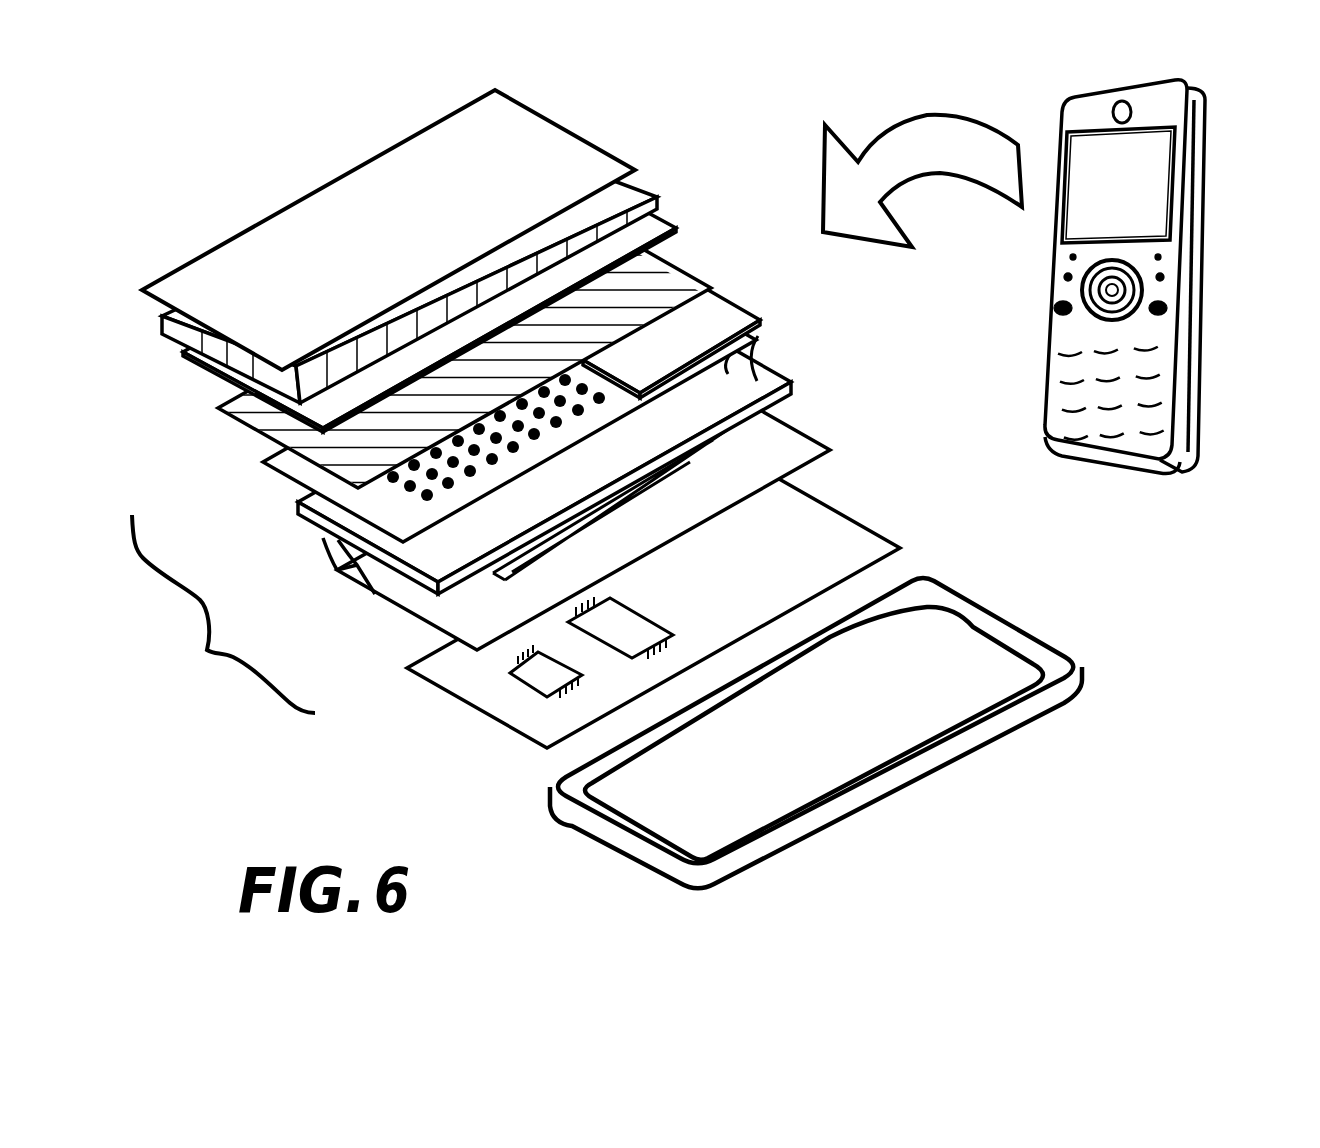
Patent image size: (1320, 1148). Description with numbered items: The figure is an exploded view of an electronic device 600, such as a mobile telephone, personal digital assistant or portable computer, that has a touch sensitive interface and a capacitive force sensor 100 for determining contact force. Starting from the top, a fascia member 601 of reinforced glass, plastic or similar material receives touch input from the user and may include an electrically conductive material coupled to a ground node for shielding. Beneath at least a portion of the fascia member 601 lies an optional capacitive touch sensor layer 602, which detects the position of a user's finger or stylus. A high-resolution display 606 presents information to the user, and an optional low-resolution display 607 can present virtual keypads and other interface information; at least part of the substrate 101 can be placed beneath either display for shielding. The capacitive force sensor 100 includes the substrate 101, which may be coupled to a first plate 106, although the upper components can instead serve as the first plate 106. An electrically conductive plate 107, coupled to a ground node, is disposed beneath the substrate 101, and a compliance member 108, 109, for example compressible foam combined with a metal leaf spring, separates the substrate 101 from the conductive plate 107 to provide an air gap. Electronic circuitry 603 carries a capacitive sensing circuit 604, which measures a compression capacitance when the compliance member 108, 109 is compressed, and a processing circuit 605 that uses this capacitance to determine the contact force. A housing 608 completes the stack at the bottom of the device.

The capacitive force sensor 100 is at (205, 653).
The substrate 101 is at (310, 472).
The first plate 106 is at (263, 422).
The electrically conductive plate 107 is at (770, 453).
The compliance member 108 is at (305, 516).
The compliance member 109 is at (362, 576).
The electronic device 600 is at (1093, 574).
The fascia member 601 is at (247, 285).
The capacitive touch sensor layer 602 is at (618, 198).
The electronic circuitry 603 is at (659, 619).
The capacitive sensing circuit 604 is at (537, 680).
The processing circuit 605 is at (630, 628).
The high-resolution display 606 is at (707, 320).
The low-resolution display 607 is at (637, 228).
The housing 608 is at (572, 816).